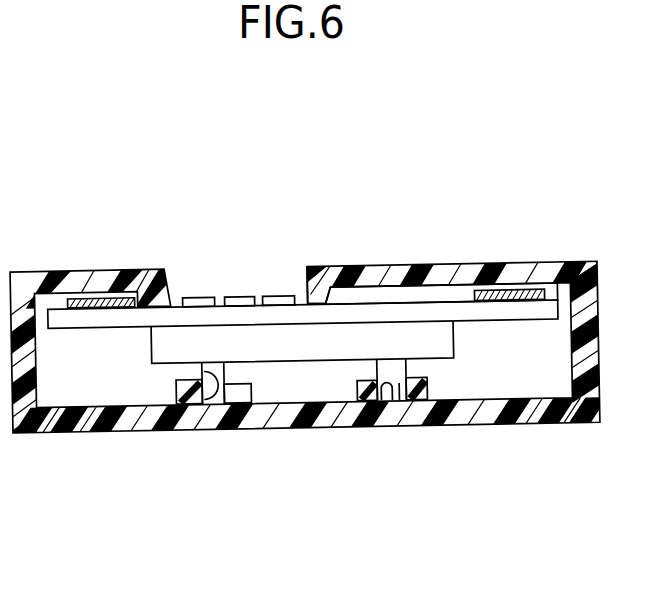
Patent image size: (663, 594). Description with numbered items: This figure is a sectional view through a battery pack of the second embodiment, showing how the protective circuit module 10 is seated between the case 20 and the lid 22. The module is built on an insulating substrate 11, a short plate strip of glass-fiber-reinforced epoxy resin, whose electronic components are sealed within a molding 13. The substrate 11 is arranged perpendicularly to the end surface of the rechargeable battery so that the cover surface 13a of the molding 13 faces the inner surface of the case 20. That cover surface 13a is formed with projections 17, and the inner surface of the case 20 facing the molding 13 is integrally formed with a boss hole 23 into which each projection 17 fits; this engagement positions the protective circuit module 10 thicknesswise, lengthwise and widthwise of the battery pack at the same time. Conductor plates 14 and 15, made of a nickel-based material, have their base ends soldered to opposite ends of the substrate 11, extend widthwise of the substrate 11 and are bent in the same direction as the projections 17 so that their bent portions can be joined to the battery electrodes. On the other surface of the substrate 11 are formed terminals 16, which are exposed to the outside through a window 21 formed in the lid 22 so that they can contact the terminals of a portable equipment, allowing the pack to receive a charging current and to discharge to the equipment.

The protective circuit module 10 is at (319, 365).
The insulating substrate 11 is at (457, 303).
The molding 13 is at (297, 342).
The cover surface 13a is at (328, 366).
The conductor plate 14 is at (527, 291).
The conductor plate 15 is at (107, 300).
The terminals 16 is at (282, 298).
The projections 17 is at (186, 398).
The case 20 is at (447, 428).
The window 21 is at (310, 300).
The lid 22 is at (437, 287).
The boss hole 23 is at (203, 373).